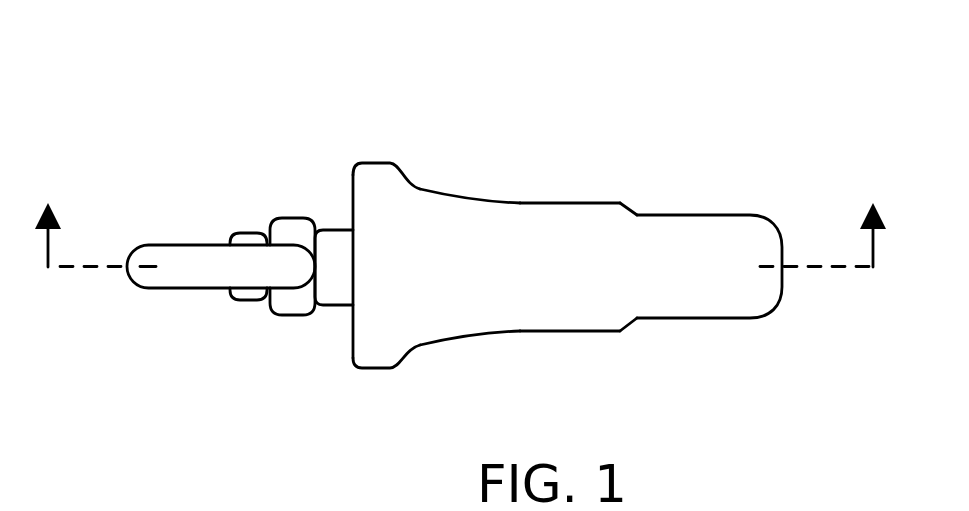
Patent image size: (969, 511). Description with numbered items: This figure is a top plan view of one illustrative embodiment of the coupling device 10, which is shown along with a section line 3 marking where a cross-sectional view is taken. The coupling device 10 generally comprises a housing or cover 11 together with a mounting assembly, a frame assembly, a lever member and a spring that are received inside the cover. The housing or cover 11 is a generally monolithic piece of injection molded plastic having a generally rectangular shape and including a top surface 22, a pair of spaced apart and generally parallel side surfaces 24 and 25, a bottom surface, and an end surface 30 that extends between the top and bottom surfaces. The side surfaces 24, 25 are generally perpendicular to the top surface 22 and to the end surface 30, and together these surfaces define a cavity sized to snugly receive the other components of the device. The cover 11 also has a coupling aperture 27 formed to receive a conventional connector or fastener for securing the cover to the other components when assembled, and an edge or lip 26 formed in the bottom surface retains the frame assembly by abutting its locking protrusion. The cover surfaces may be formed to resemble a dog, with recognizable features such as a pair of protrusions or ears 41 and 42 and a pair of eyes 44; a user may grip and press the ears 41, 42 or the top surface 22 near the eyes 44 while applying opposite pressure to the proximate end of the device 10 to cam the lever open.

The section line 3- 3 is at (460, 256).
The coupling device 10 is at (355, 100).
The housing or cover 11 is at (764, 172).
The top surface 22 is at (595, 273).
The side surface 24 is at (575, 332).
The side surface 25 is at (583, 203).
The edge or lip 26 is at (520, 203).
The coupling aperture 27 is at (515, 332).
The end surface 30 is at (782, 247).
The ear 41 is at (372, 358).
The ear 42 is at (368, 175).
The eyes 44 is at (628, 210).